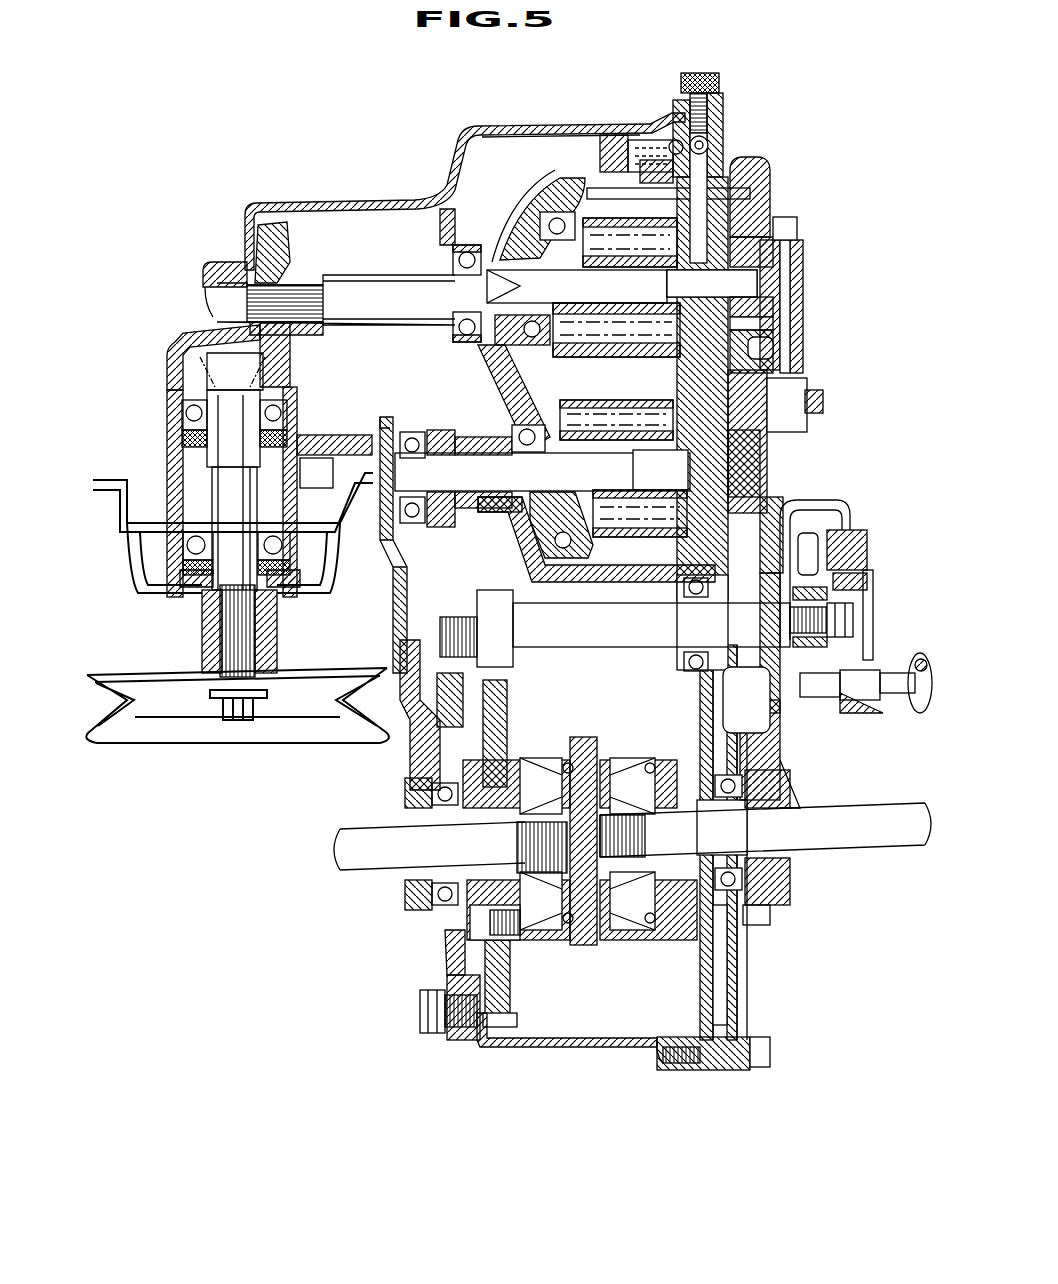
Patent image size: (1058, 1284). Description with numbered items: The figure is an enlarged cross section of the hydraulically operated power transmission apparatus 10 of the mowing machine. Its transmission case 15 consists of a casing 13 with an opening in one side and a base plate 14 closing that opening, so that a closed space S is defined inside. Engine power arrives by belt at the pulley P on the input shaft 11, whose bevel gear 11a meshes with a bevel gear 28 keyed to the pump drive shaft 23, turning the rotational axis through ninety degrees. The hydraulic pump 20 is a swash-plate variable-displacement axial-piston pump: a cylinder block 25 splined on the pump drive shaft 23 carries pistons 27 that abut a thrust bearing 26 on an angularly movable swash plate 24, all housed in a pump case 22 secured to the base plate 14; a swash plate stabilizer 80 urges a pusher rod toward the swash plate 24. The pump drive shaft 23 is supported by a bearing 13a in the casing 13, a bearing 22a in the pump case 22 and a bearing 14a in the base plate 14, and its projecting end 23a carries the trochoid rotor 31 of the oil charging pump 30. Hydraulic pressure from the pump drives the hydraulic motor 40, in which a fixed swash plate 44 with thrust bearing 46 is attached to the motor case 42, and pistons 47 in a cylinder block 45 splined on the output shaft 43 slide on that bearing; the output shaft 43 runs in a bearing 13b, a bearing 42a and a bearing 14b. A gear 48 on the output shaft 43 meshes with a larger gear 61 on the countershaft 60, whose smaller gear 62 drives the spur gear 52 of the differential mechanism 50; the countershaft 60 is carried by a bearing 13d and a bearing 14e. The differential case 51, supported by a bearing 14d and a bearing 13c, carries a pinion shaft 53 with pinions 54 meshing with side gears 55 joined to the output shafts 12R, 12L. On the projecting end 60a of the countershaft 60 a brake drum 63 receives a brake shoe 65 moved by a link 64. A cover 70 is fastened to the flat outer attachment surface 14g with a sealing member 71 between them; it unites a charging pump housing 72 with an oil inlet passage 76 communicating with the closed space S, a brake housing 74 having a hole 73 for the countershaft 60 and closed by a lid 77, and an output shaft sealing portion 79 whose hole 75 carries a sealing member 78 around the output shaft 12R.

The hydraulically operated power transmission apparatus 10 is at (506, 572).
The input shaft 11 is at (234, 533).
The bevel gear 11a is at (178, 372).
The output shaft 12L is at (367, 873).
The output shaft 12R is at (873, 847).
The casing 13 is at (431, 511).
The bearing 13a is at (237, 264).
The bearing 13b is at (380, 430).
The bearing 13c is at (427, 787).
The bearing 13d is at (397, 583).
The base plate 14 is at (743, 578).
The bearing 14a is at (776, 247).
The bearing 14b is at (733, 437).
The bearing 14d is at (763, 890).
The bearing 14e is at (690, 668).
The flat outer attachment surface 14g is at (797, 497).
The transmission case 15 is at (327, 198).
The hydraulic pump 20 is at (575, 265).
The pump case 22 is at (533, 172).
The bearing 22a is at (453, 247).
The pump drive shaft 23 is at (378, 275).
The projecting end 23a is at (755, 282).
The swash plate 24 is at (527, 195).
The cylinder block 25 is at (610, 400).
The thrust bearing 26 is at (558, 210).
The pistons 27 is at (572, 290).
The bevel gear 28 is at (292, 378).
The oil charging pump 30 is at (772, 317).
The rotor 31 is at (757, 317).
The hydraulic motor 40 is at (541, 484).
The motor case 42 is at (523, 567).
The bearing 42a is at (487, 512).
The output shaft 43 is at (465, 438).
The swash plate 44 is at (490, 420).
The cylinder block 45 is at (625, 549).
The thrust bearing 46 is at (553, 428).
The pistons 47 is at (561, 511).
The gear 48 is at (407, 420).
The differential mechanism 50 is at (580, 876).
The differential case 51 is at (580, 867).
The spur gear 52 is at (507, 680).
The pinion shaft 53 is at (592, 862).
The pinions 54 is at (627, 747).
The side gears 55 is at (563, 750).
The countershaft 60 is at (686, 592).
The projecting end 60a is at (860, 580).
The larger gear 61 is at (417, 747).
The smaller gear 62 is at (512, 662).
The brake drum 63 is at (830, 500).
The link 64 is at (919, 653).
The brake shoe 65 is at (850, 532).
The cover 70 is at (792, 549).
The sealing member 71 is at (727, 167).
The charging pump housing 72 is at (775, 217).
The hole 73 is at (751, 733).
The brake housing 74 is at (800, 743).
The hole 75 is at (773, 793).
The oil inlet passage 76 is at (787, 360).
The lid 77 is at (868, 615).
The sealing member 78 is at (780, 863).
The output shaft sealing portion 79 is at (773, 907).
The swash plate stabilizer 80 is at (757, 183).
The closed space S is at (473, 165).
The pulley P is at (205, 480).